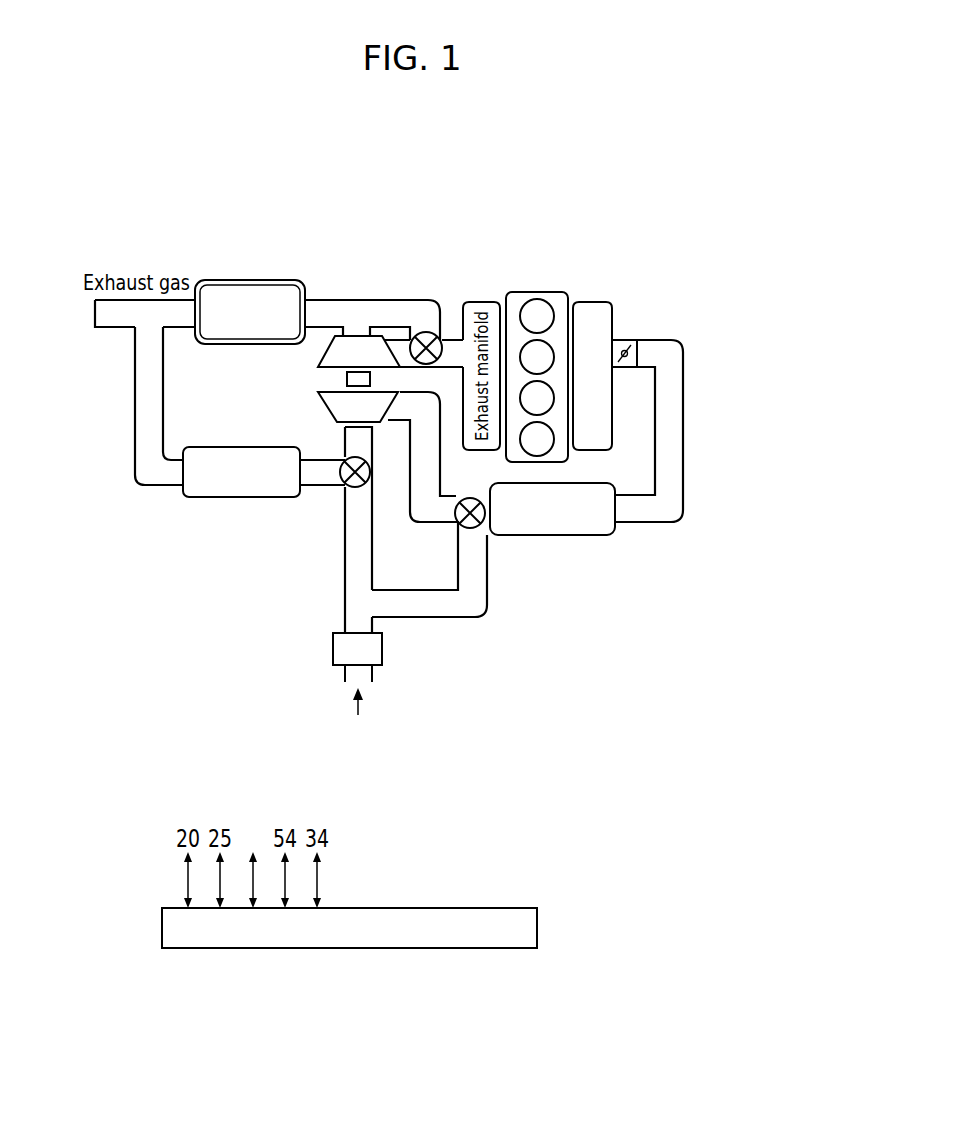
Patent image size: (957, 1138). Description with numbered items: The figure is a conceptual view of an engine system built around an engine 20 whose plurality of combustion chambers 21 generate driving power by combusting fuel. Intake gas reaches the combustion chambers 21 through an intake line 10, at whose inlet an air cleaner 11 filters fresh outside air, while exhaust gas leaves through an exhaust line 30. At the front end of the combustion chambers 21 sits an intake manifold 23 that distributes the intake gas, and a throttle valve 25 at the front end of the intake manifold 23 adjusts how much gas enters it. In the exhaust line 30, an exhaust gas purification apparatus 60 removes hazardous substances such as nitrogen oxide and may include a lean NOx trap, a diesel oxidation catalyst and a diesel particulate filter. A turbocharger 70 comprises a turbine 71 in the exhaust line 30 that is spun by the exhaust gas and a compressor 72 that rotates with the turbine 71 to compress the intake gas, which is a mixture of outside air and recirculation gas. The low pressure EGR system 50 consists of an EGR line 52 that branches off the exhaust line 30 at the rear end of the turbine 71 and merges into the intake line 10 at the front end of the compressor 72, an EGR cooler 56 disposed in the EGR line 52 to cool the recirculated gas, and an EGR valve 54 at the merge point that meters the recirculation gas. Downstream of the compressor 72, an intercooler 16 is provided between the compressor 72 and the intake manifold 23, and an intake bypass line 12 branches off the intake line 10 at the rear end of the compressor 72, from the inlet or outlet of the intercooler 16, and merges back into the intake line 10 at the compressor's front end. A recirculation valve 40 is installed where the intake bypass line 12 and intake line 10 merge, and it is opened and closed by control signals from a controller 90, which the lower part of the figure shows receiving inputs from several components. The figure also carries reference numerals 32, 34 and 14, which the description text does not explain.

The intake line 10 is at (372, 442).
The air cleaner 11 is at (333, 648).
The intake bypass line 12 is at (455, 617).
The intake line sensor 14 is at (253, 866).
The intercooler 16 is at (551, 537).
The engine 20 is at (616, 377).
The combustion chamber 21 is at (554, 390).
The intake manifold 23 is at (590, 302).
The throttle valve 25 is at (629, 334).
The exhaust line 30 is at (400, 340).
The bypass line 32 is at (398, 300).
The wastegate valve 34 is at (423, 333).
The recirculation valve 40 is at (476, 530).
The EGR system 50 is at (237, 470).
The EGR line 52 is at (135, 410).
The EGR valve 54 is at (333, 510).
The EGR cooler 56 is at (243, 499).
The exhaust gas purification apparatus 60 is at (248, 280).
The turbocharger 70 is at (300, 379).
The turbine 71 is at (320, 363).
The compressor 72 is at (320, 395).
The controller 90 is at (537, 930).